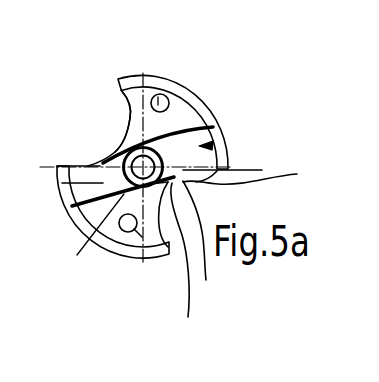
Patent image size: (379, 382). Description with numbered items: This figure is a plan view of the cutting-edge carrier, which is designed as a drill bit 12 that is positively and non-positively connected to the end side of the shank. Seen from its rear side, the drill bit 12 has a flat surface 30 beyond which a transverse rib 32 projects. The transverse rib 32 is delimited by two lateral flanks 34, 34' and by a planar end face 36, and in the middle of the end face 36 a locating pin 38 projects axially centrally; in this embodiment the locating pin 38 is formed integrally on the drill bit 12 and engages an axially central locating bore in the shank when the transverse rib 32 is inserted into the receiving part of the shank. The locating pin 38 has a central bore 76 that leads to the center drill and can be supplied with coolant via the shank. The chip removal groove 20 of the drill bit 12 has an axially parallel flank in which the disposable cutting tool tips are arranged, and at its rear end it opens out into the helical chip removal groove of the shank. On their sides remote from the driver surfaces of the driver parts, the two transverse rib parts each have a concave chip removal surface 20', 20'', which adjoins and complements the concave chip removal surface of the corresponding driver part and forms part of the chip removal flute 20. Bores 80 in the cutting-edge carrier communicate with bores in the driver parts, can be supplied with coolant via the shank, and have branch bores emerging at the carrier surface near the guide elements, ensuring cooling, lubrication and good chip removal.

The drill bit 12 is at (176, 99).
The chip removal groove 20 is at (126, 222).
The concave chip removal surface 20' is at (210, 241).
The concave chip removal surface 20'' is at (93, 91).
The flat surface 30 is at (190, 113).
The transverse rib 32 is at (218, 134).
The lateral flank 34 is at (90, 103).
The lateral flank 34' is at (123, 268).
The planar end face 36 is at (62, 183).
The locating pin 38 is at (252, 174).
The central bore 76 is at (84, 231).
The bore 80 is at (161, 90).